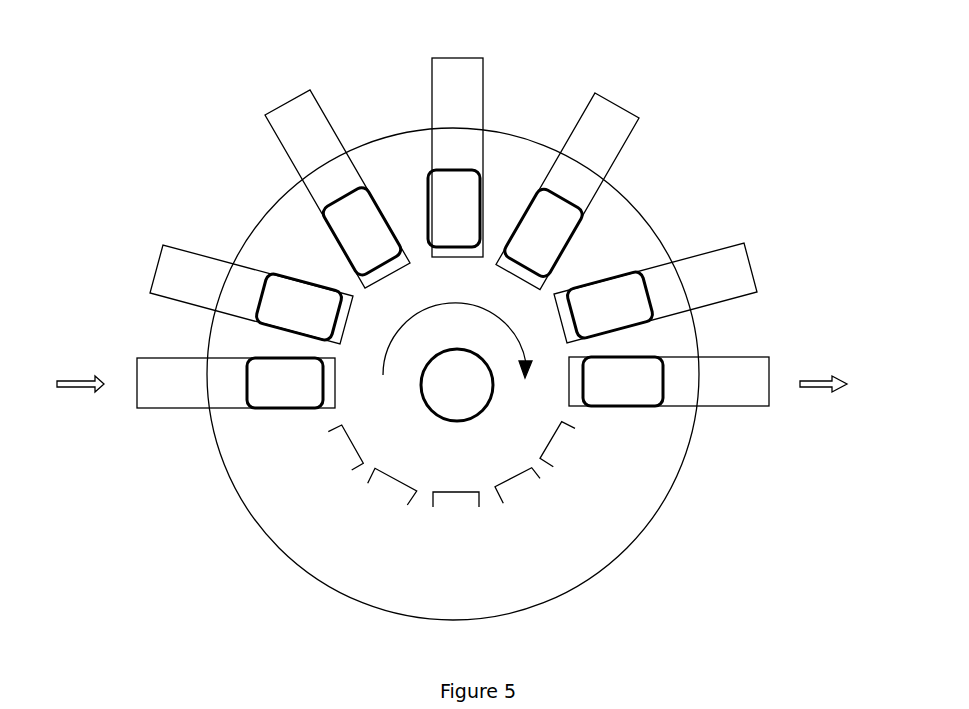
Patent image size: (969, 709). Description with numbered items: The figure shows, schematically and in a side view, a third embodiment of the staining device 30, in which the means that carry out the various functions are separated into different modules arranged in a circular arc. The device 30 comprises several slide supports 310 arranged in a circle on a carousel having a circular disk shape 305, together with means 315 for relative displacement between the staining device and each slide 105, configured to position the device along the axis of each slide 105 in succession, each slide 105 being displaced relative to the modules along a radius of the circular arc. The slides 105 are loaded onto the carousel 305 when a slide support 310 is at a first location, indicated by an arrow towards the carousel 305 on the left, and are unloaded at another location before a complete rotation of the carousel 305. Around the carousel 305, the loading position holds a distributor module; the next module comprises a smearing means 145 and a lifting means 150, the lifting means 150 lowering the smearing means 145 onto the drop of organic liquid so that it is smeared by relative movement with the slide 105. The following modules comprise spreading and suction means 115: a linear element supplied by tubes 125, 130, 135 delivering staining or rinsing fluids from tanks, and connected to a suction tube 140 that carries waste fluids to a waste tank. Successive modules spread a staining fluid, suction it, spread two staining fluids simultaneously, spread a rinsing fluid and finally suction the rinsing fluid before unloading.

The staining device 30 is at (205, 148).
The slide 105 is at (293, 112).
The spreading means and suction means 115 is at (501, 316).
The fluid delivery tube 125 is at (372, 254).
The fluid delivery tube 130 is at (559, 226).
The fluid delivery tube 135 is at (602, 323).
The suction tube 140 is at (455, 223).
The smearing means 145 is at (247, 340).
The lifting means 150 is at (303, 316).
The carousel 305 is at (617, 528).
The slide support 310 is at (533, 473).
The means for relative displacement 315 is at (442, 386).